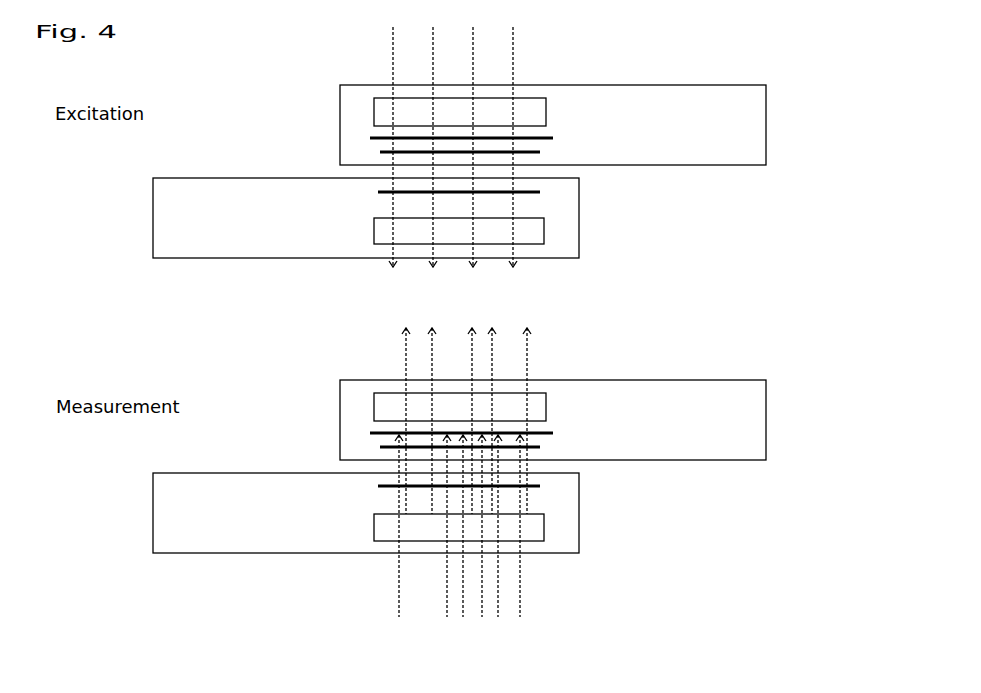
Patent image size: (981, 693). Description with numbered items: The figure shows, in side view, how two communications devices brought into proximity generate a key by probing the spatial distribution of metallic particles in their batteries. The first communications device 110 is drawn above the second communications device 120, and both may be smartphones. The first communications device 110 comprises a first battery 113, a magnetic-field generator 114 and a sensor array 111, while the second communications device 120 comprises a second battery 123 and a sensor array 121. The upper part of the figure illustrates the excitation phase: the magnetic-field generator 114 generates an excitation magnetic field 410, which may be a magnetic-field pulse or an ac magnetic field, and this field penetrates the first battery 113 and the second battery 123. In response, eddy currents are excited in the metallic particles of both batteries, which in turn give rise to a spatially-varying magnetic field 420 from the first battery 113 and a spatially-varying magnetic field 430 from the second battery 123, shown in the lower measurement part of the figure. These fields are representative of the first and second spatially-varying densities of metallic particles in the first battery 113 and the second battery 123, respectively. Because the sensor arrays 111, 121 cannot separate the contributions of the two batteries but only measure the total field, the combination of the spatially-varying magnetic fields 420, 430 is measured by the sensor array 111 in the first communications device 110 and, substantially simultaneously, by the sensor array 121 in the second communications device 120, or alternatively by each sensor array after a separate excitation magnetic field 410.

The first communications device 110 is at (738, 84).
The sensor array 111 is at (380, 151).
The first battery 113 is at (377, 97).
The magnetic-field generator 114 is at (371, 137).
The second communications device 120 is at (178, 178).
The sensor array 121 is at (540, 192).
The second battery 123 is at (544, 244).
The excitation magnetic field 410 is at (502, 33).
The spatially-varying magnetic field 420 is at (513, 338).
The spatially-varying magnetic field 430 is at (513, 605).